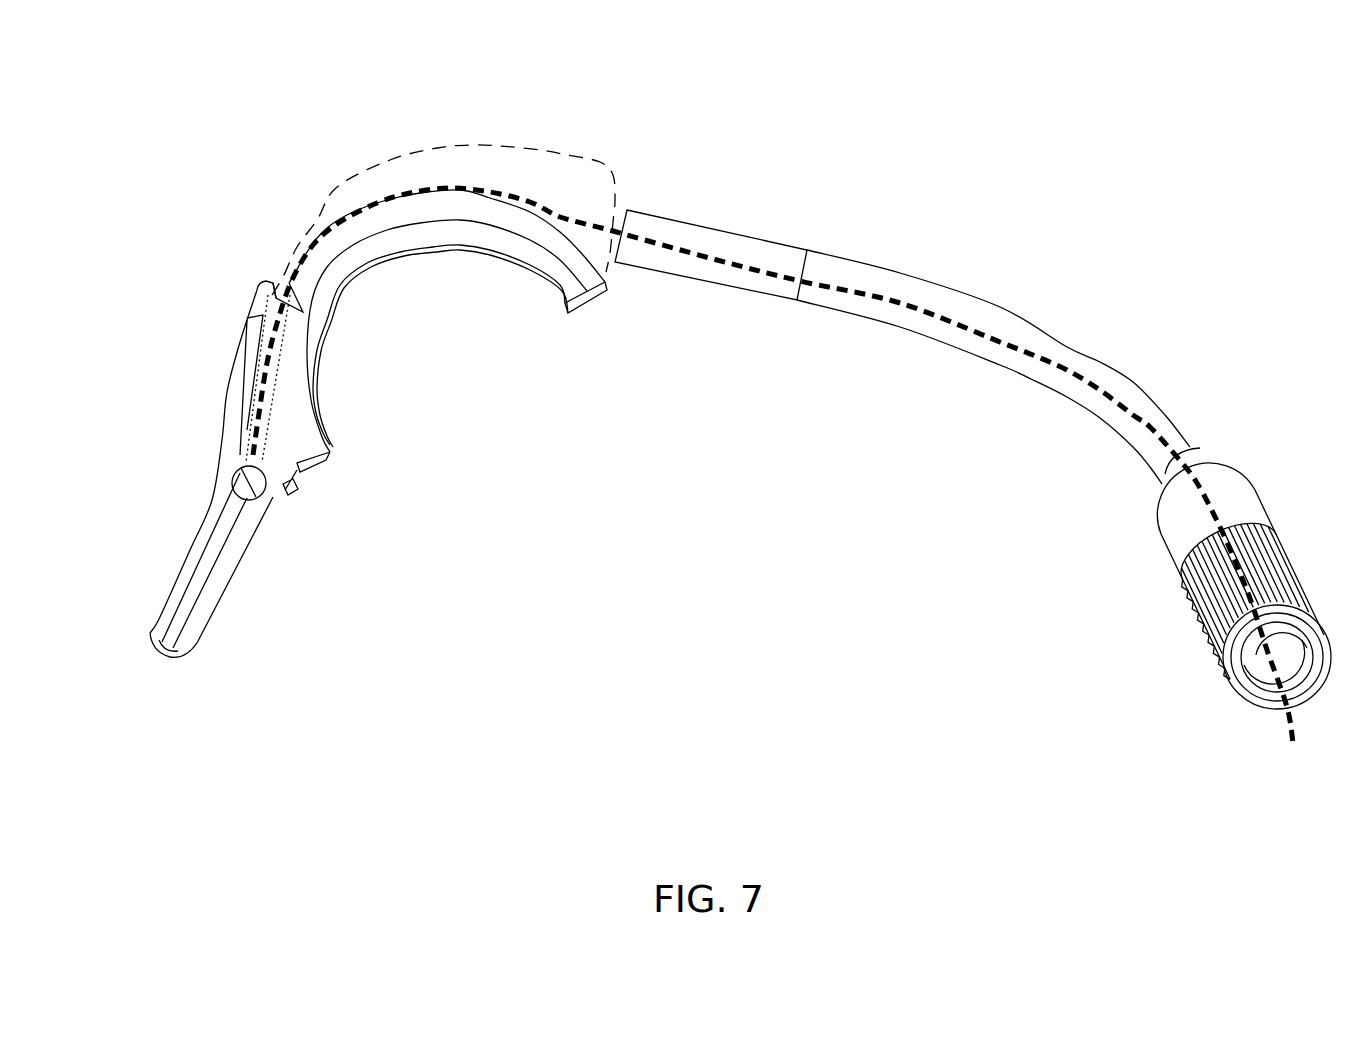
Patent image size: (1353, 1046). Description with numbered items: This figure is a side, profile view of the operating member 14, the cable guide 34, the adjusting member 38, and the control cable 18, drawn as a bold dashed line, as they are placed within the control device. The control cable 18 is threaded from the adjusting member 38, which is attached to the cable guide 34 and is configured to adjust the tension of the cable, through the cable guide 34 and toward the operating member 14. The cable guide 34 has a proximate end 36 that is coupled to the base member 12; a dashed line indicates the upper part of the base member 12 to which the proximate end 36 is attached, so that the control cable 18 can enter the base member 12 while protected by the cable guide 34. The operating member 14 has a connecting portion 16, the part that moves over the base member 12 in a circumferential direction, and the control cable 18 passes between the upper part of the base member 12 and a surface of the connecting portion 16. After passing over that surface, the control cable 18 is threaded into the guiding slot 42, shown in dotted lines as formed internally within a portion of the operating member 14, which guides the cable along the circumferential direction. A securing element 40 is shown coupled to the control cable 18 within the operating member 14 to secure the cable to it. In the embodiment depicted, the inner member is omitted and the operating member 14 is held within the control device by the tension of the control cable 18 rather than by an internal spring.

The base member 12 is at (503, 150).
The operating member 14 is at (150, 625).
The connecting portion 16 is at (461, 262).
The control cable 18 is at (1282, 724).
The cable guide 34 is at (878, 262).
The proximate end 36 is at (630, 210).
The adjusting member 38 is at (1263, 513).
The securing element 40 is at (262, 493).
The guiding slot 42 is at (262, 322).